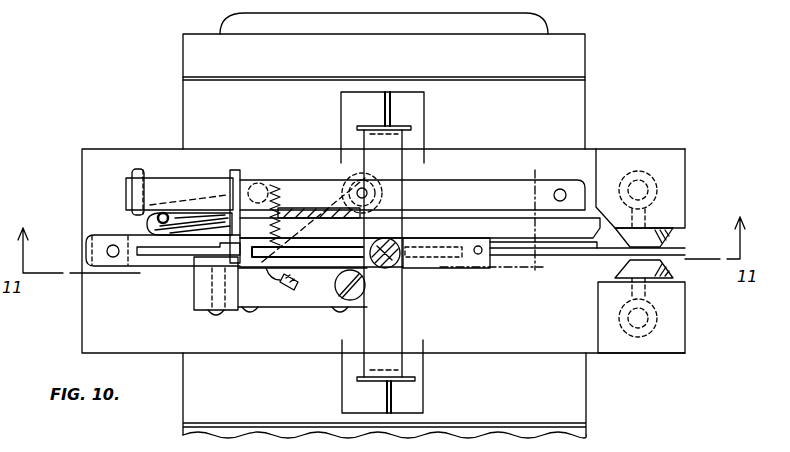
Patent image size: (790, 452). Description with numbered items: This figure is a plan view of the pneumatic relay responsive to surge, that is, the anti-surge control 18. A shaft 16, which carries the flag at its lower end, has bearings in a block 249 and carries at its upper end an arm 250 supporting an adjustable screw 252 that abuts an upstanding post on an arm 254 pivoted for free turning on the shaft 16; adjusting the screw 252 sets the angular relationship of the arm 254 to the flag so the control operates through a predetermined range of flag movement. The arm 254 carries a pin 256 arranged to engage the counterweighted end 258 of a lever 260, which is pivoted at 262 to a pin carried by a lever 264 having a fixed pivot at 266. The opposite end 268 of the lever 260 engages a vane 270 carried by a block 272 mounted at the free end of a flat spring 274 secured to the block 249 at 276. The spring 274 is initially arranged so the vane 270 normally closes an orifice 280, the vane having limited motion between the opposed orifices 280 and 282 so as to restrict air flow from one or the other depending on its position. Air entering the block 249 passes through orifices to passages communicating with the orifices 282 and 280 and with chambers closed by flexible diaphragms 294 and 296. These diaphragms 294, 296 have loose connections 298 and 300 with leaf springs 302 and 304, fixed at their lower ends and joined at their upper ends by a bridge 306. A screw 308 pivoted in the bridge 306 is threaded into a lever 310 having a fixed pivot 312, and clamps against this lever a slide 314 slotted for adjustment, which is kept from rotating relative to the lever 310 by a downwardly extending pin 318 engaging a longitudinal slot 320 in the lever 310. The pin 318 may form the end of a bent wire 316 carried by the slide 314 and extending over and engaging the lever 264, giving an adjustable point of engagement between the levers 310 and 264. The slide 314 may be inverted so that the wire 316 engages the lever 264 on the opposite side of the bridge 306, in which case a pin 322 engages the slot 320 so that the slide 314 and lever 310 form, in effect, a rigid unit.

The shaft 16 is at (346, 183).
The anti-surge control 18 is at (598, 92).
The block 249 is at (138, 148).
The arm 250 is at (275, 276).
The adjustable screw 252 is at (298, 296).
The arm 254 is at (155, 228).
The pin 256 is at (157, 214).
The counterweighted end 258 is at (200, 175).
The lever 260 is at (136, 176).
The pivot 262 is at (268, 183).
The lever 264 is at (458, 183).
The fixed pivot 266 is at (561, 189).
The end of lever 268 is at (592, 248).
The vane 270 is at (673, 252).
The block 272 is at (200, 290).
The flat spring 274 is at (262, 305).
The securing point 276 is at (330, 298).
The orifice 280 is at (675, 224).
The orifice 282 is at (665, 272).
The flexible diaphragm 294 is at (510, 423).
The flexible diaphragm 296 is at (507, 80).
The loose connection 298 is at (415, 401).
The loose connection 300 is at (382, 109).
The leaf spring 302 is at (415, 379).
The leaf spring 304 is at (411, 129).
The bridge 306 is at (402, 326).
The screw 308 is at (396, 264).
The lever 310 is at (113, 264).
The fixed pivot 312 is at (107, 249).
The slide 314 is at (460, 268).
The bent wire 316 is at (240, 172).
The pin 318 is at (230, 258).
The longitudinal slot 320 is at (150, 266).
The pin 322 is at (481, 254).